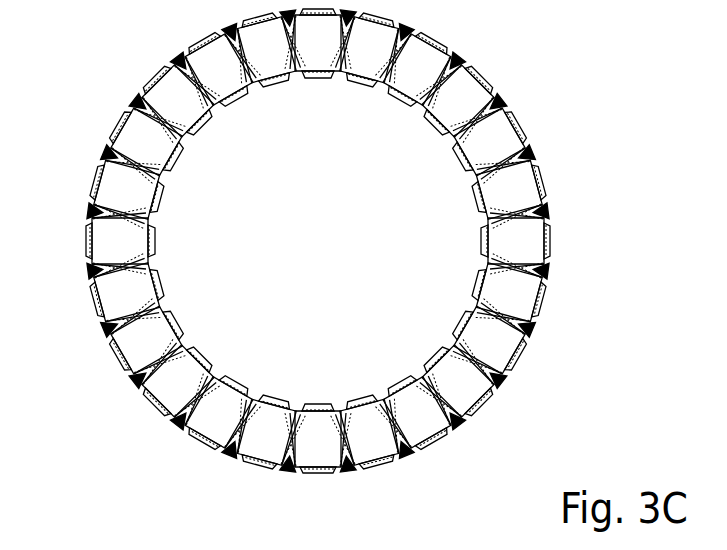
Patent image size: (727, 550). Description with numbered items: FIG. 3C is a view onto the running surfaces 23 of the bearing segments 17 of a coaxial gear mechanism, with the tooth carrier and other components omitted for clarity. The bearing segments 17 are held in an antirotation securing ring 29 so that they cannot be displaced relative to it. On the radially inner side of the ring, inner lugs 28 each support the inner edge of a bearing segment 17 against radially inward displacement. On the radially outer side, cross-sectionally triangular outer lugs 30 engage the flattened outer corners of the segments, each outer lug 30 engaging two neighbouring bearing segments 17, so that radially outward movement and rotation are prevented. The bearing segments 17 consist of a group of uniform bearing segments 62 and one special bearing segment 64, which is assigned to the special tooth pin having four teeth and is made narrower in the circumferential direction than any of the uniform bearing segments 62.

The bearing segment 17 is at (120, 128).
The running surface 23 is at (133, 140).
The inner lug 28 is at (207, 123).
The antirotation securing ring 29 is at (541, 173).
The outer lug 30 is at (133, 103).
The uniform bearing segment 62 is at (259, 462).
The special bearing segment 64 is at (375, 470).